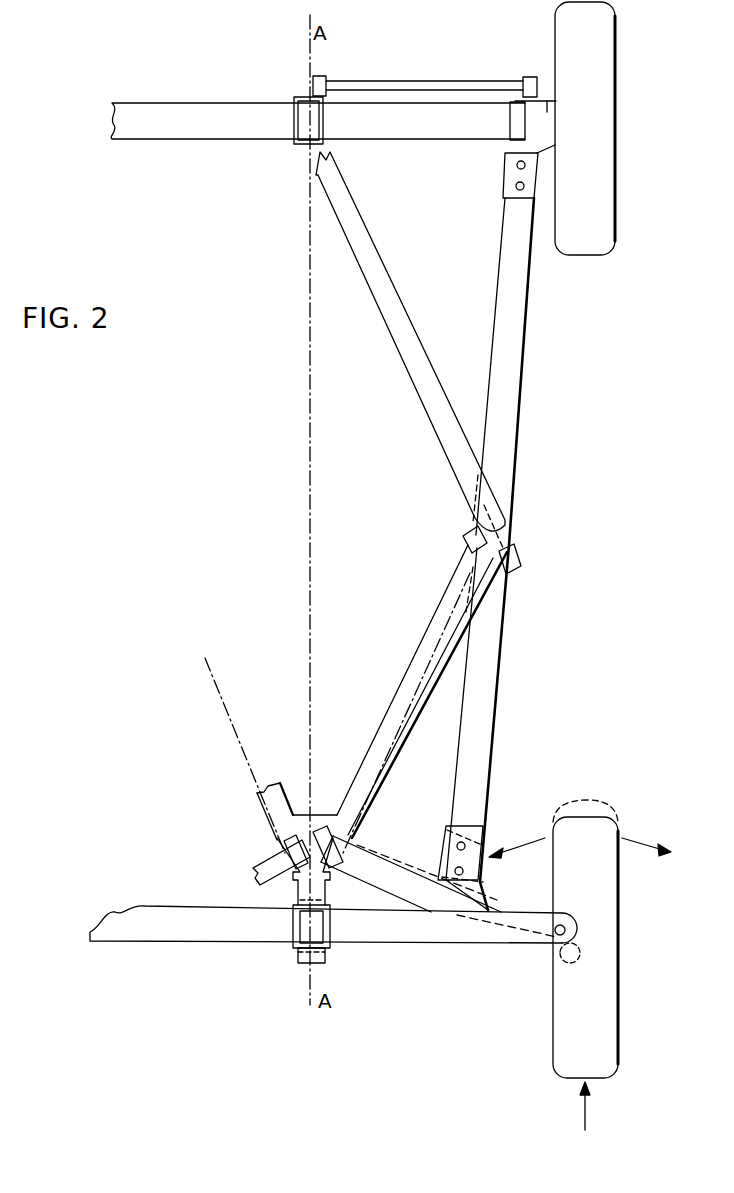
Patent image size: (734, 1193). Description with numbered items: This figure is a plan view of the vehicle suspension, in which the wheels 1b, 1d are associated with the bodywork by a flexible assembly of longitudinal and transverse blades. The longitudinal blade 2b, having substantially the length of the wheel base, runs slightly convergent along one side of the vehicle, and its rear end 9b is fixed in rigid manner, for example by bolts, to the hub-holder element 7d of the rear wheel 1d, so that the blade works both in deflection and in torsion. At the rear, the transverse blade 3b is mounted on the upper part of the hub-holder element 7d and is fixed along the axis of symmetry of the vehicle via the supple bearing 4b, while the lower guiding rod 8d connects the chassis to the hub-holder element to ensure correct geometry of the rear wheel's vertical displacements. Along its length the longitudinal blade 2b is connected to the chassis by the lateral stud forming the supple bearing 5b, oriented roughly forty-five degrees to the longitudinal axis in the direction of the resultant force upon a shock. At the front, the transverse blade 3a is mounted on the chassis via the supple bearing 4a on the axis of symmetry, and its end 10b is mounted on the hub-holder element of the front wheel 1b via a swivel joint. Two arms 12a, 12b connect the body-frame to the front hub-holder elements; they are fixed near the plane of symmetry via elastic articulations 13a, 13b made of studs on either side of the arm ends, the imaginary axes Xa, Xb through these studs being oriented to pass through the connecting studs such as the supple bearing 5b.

The wheel 1b is at (618, 1032).
The wheel 1d is at (616, 75).
The longitudinal blade 2b is at (502, 436).
The transverse blade 3a is at (428, 958).
The transverse blade 3b is at (207, 102).
The supple bearing 4a is at (297, 958).
The supple bearing 4b is at (293, 112).
The supple bearing 5b is at (518, 560).
The hub-holder element 7d is at (546, 108).
The lower guiding rod 8d is at (441, 80).
The end of longitudinal blade 9b is at (512, 186).
The end of transverse blade 10b is at (570, 925).
The arm 12a is at (263, 868).
The arm 12b is at (383, 870).
The elastic articulation 13a is at (280, 833).
The elastic articulation 13b is at (368, 805).
The axis Xa is at (234, 728).
The axis Xb is at (412, 697).